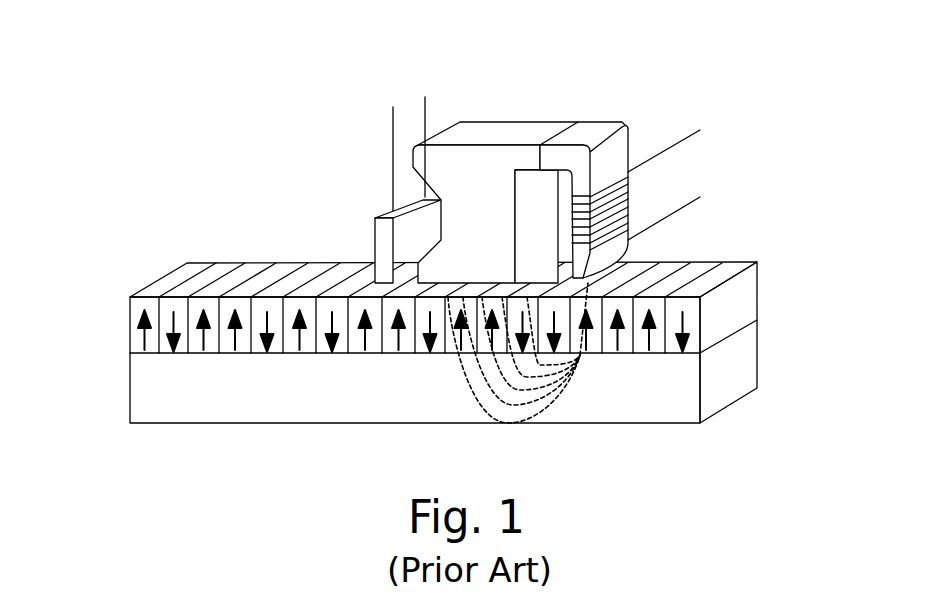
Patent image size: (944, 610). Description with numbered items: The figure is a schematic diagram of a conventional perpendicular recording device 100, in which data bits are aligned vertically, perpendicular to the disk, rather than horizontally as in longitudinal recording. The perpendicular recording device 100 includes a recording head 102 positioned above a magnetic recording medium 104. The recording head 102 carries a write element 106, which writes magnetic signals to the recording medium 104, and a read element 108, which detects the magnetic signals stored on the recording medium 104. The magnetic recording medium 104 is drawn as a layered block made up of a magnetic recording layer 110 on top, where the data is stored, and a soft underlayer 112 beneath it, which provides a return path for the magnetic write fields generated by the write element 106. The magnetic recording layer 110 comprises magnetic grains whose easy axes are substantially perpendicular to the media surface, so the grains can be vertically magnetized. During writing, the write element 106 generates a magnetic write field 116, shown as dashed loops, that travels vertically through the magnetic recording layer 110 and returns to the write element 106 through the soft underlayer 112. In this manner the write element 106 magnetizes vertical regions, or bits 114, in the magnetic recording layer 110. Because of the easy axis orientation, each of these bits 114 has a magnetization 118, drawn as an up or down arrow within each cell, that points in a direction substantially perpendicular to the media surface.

The perpendicular recording device 100 is at (439, 211).
The recording head 102 is at (494, 162).
The magnetic recording medium 104 is at (439, 300).
The write element 106 is at (622, 156).
The read element 108 is at (387, 239).
The magnetic recording layer 110 is at (371, 341).
The soft underlayer 112 is at (130, 391).
The bits 114 is at (255, 267).
The magnetic write field 116 is at (583, 356).
The magnetization 118 is at (145, 342).